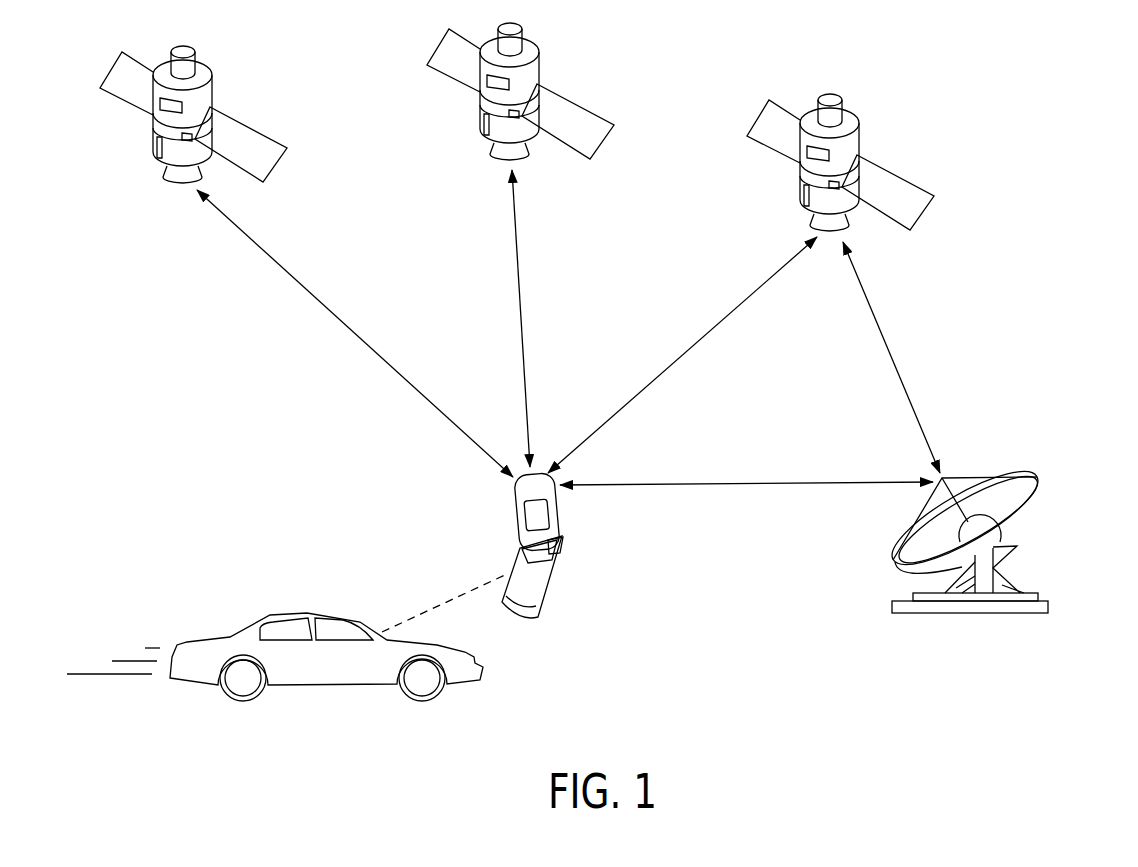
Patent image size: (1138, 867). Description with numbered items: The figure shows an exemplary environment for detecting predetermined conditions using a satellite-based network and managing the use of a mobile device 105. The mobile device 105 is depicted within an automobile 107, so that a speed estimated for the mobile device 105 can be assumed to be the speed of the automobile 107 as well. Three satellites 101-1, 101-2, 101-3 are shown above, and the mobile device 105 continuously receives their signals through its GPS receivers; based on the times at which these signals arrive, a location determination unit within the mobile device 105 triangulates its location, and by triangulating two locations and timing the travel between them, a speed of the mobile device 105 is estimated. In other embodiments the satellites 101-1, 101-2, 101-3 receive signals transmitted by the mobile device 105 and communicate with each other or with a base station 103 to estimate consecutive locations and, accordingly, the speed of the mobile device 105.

The satellite 101-1 is at (217, 80).
The satellite 101-2 is at (544, 57).
The satellite 101-3 is at (864, 128).
The base station 103 is at (1037, 477).
The mobile device 105 is at (558, 517).
The automobile 107 is at (298, 612).